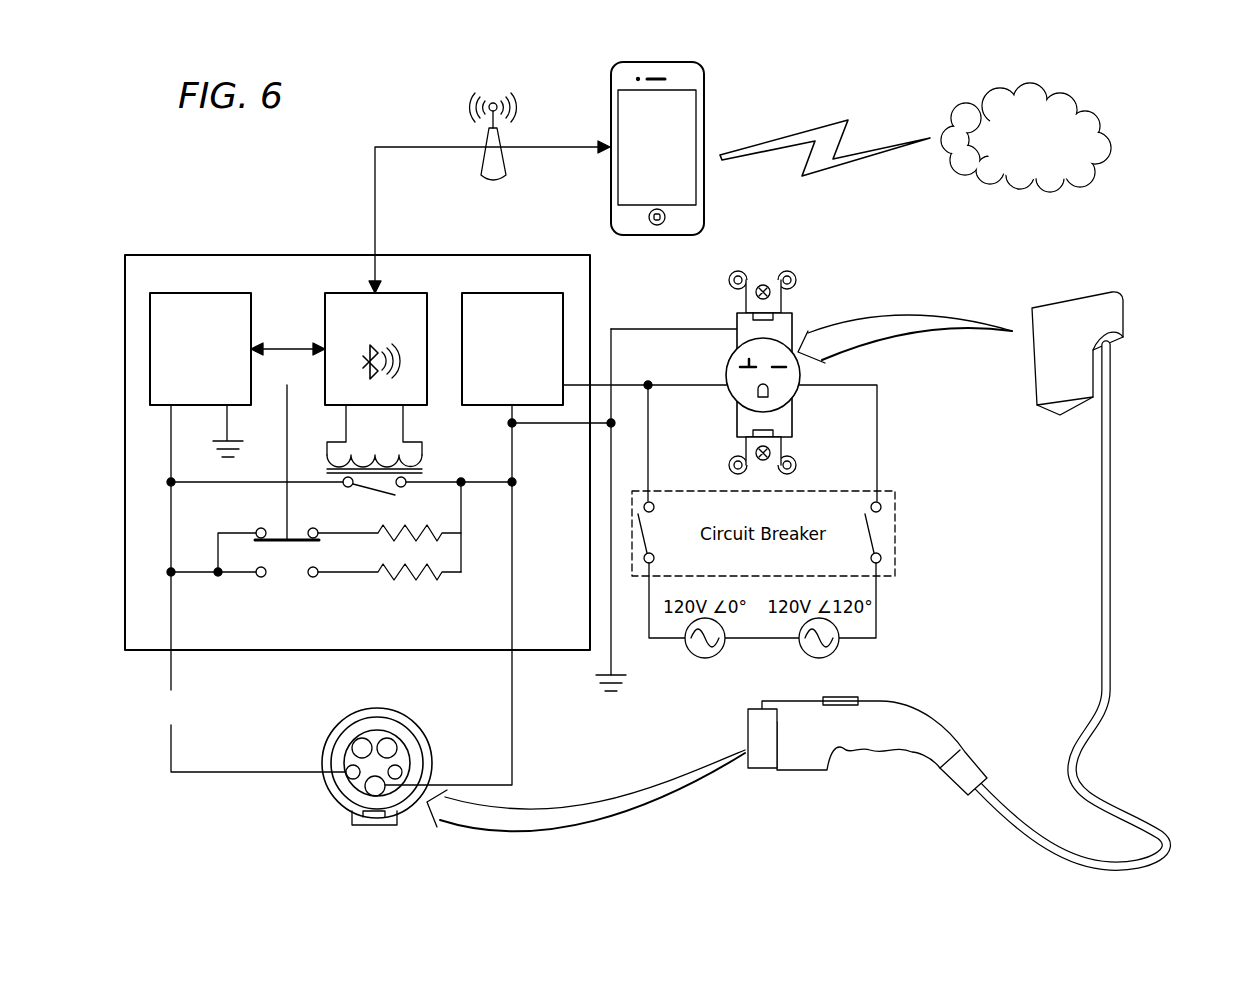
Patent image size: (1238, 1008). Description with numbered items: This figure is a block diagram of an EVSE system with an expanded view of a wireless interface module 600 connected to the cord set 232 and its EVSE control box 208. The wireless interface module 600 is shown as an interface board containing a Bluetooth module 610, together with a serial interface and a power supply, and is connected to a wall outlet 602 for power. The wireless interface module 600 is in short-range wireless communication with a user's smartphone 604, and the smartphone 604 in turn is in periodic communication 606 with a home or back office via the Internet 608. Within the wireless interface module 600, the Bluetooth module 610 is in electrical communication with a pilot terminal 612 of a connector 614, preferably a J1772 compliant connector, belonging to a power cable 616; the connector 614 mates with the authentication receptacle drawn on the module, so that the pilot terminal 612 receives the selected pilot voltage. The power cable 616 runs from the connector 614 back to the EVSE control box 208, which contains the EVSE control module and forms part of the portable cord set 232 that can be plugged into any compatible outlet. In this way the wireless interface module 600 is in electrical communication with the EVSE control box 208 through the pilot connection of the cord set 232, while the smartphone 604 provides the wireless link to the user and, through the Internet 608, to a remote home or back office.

The wireless interface module 600 is at (279, 248).
The wall outlet 602 is at (798, 282).
The smartphone 604 is at (704, 190).
The periodic communication 606 is at (822, 167).
The Internet 608 is at (1030, 185).
The Bluetooth module 610 is at (400, 292).
The pilot terminal 612 is at (352, 778).
The connector 614 is at (327, 737).
The power cable 616 is at (1101, 622).
The cord set 232 is at (1120, 474).
The EVSE control box 208 is at (1100, 296).